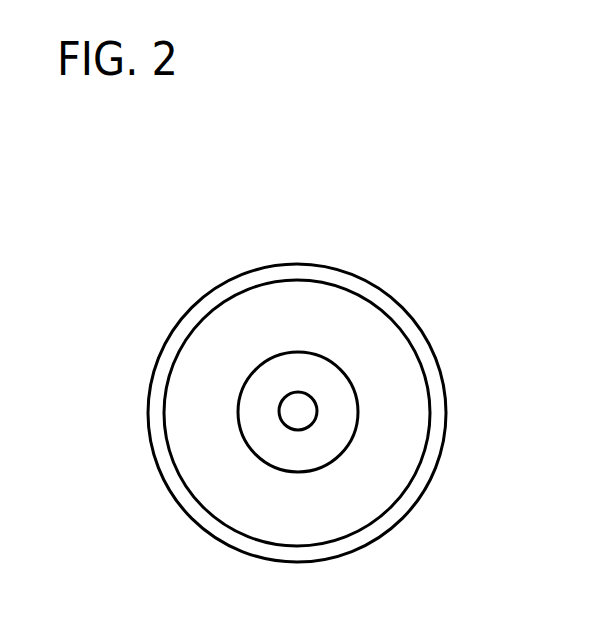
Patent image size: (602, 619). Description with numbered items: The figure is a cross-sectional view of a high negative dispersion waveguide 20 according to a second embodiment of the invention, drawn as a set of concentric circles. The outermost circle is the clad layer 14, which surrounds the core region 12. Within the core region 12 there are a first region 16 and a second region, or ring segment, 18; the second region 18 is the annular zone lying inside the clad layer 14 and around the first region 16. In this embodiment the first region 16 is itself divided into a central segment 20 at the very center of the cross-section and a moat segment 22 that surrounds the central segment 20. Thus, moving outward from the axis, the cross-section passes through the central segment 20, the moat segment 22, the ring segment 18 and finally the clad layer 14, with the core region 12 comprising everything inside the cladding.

The core region 12 is at (432, 412).
The clad layer 14 is at (417, 315).
The first region 16 is at (317, 411).
The second region 18 is at (296, 312).
The high negative dispersion waveguide 20 is at (420, 227).
The moat segment 22 is at (267, 386).